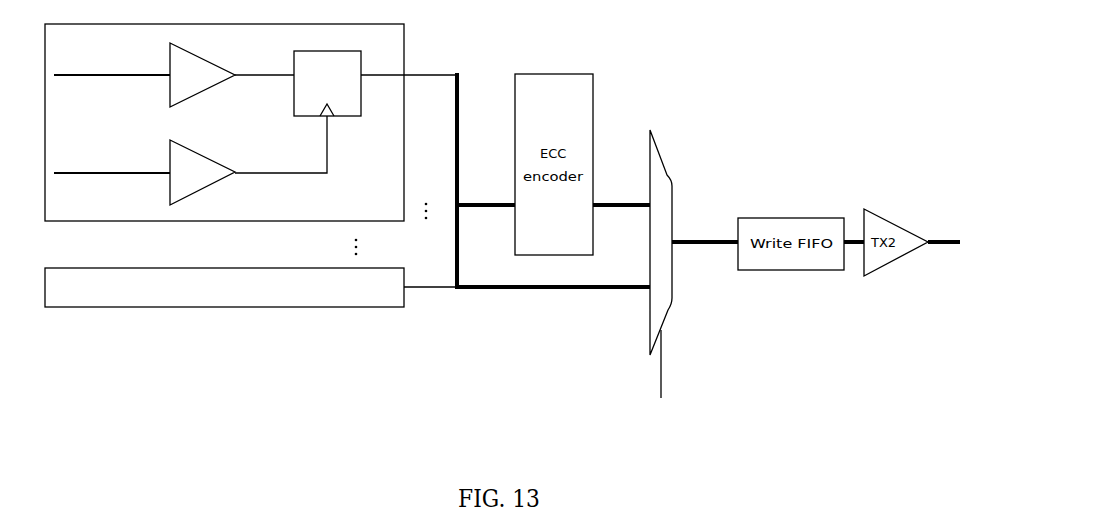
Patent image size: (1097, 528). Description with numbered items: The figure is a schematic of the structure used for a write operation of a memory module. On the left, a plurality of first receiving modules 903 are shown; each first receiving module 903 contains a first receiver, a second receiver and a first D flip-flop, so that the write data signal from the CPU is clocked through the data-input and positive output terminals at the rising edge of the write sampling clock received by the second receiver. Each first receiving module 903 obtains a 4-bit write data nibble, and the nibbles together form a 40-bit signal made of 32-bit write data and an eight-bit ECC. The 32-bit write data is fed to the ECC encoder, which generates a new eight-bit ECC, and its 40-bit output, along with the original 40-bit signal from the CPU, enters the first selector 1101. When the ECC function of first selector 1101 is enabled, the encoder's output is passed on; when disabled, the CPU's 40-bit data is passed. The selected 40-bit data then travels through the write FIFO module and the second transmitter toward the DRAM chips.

The first receiving module 903 is at (318, 24).
The first selector 1101 is at (660, 156).
The 4-bit data bus 4 is at (436, 171).
The 32-bit data bus 32 is at (486, 193).
The 40-bit data bus 40 is at (597, 234).